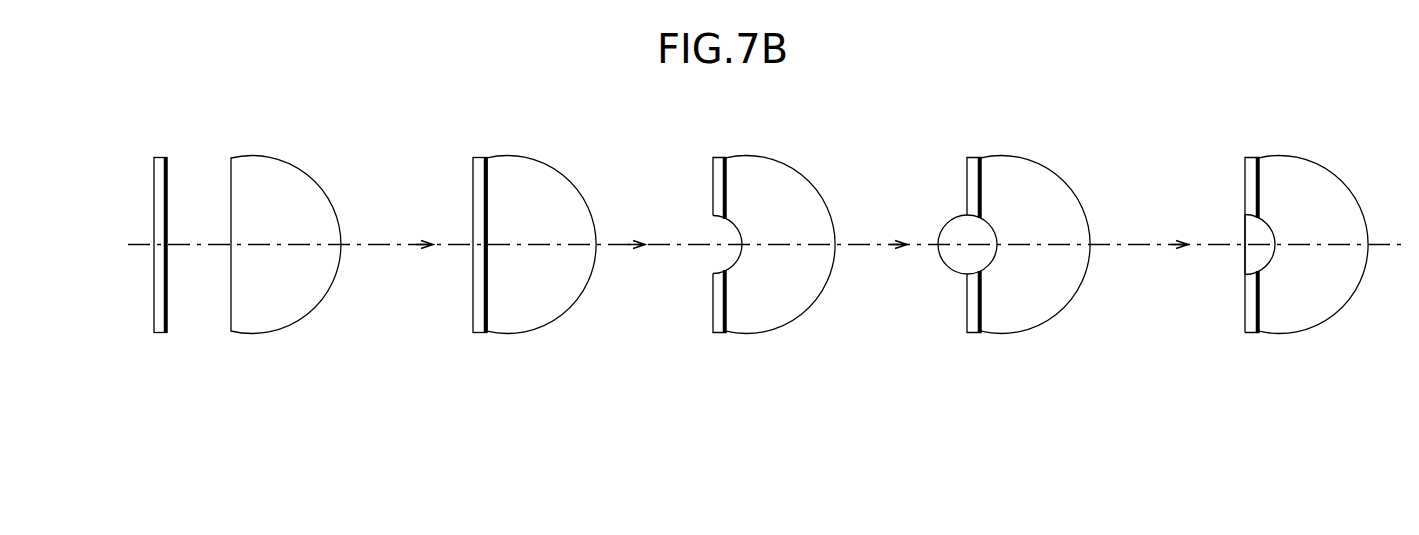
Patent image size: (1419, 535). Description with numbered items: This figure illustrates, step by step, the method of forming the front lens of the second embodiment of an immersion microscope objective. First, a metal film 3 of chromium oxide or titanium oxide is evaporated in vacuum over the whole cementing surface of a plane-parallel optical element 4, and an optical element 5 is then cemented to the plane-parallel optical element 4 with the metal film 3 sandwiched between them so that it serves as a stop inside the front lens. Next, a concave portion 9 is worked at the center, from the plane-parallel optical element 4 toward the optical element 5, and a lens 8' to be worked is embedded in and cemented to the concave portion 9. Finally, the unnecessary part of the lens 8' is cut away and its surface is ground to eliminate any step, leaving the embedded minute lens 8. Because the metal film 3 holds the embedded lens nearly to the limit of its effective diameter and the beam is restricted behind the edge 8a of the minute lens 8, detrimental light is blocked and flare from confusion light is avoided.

The metal film 3 is at (168, 172).
The plane-parallel optical element 4 is at (160, 323).
The optical element 5 is at (278, 314).
The concave portion 9 is at (732, 223).
The lens to be worked 8' is at (935, 221).
The minute lens 8 is at (1230, 261).
The edge of the embedded lens 8a is at (1246, 218).